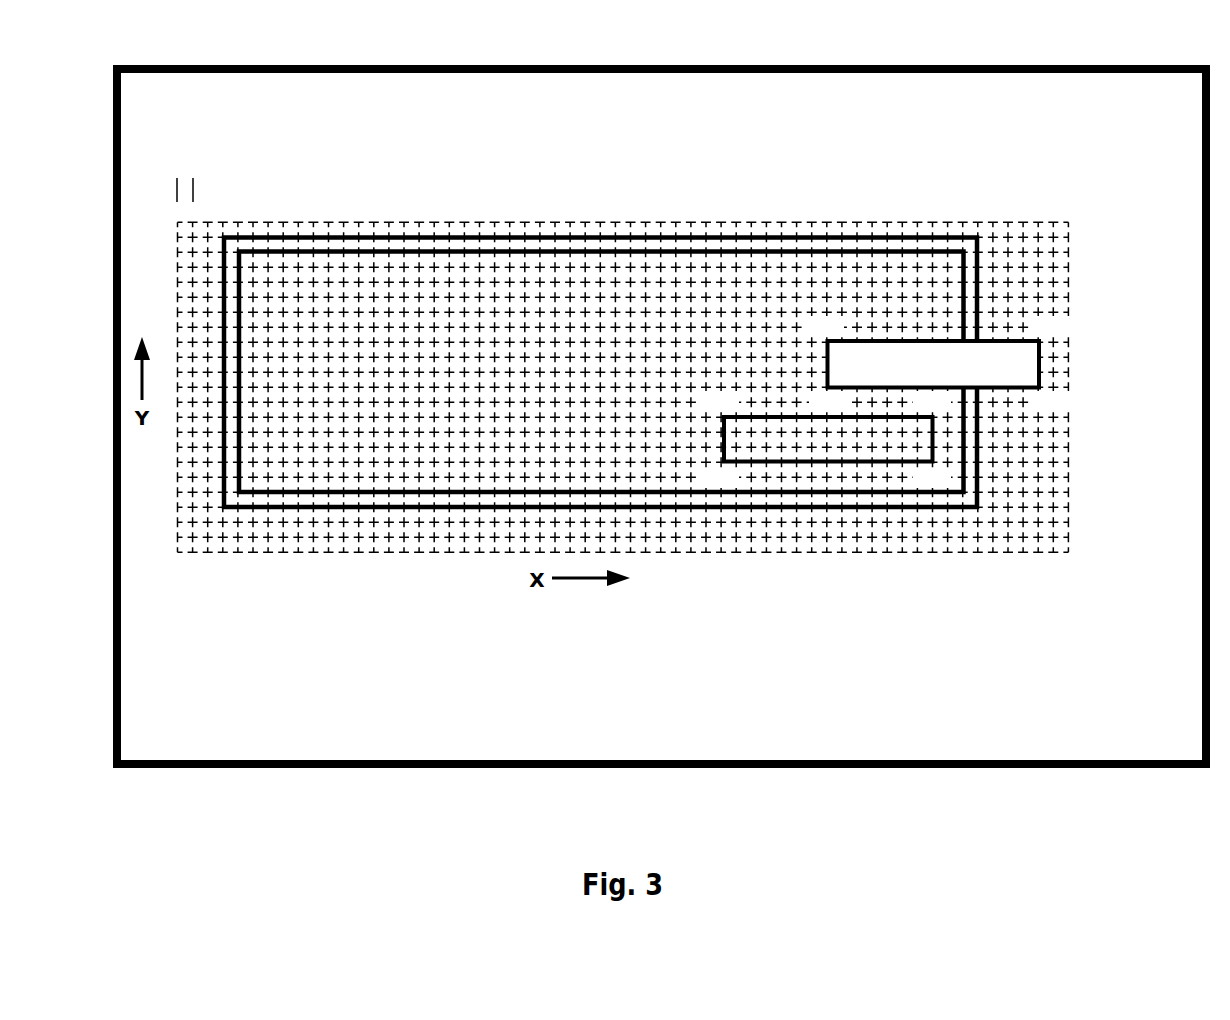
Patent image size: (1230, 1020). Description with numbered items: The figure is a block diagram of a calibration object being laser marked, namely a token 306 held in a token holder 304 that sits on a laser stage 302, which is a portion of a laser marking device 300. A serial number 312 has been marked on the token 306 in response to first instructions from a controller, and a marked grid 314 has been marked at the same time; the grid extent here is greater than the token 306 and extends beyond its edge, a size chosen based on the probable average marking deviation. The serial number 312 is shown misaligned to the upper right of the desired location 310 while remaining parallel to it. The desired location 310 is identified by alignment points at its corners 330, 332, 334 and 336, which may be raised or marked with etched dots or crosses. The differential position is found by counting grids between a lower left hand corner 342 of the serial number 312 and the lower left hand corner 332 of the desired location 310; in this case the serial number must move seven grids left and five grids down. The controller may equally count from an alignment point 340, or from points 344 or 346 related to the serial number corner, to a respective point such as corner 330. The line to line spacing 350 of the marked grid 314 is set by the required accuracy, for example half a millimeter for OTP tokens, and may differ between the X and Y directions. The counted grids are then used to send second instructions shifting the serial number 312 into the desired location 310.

The laser marking device 300 is at (661, 445).
The laser stage 302 is at (661, 416).
The token holder 304 is at (659, 218).
The token 306 is at (378, 506).
The desired location 310 is at (803, 497).
The serial number 312 is at (934, 364).
The marked grid 314 is at (1019, 201).
The corner of desired location 330 is at (720, 401).
The lower left hand corner of desired location 332 is at (720, 478).
The corner of desired location 334 is at (932, 401).
The corner of desired location 336 is at (932, 478).
The alignment point on marked image 340 is at (825, 326).
The lower left hand corner of serial number 342 is at (828, 401).
The point related to serial number corner 344 is at (1052, 326).
The point related to serial number corner 346 is at (1052, 401).
The line to line spacing 350 is at (223, 190).